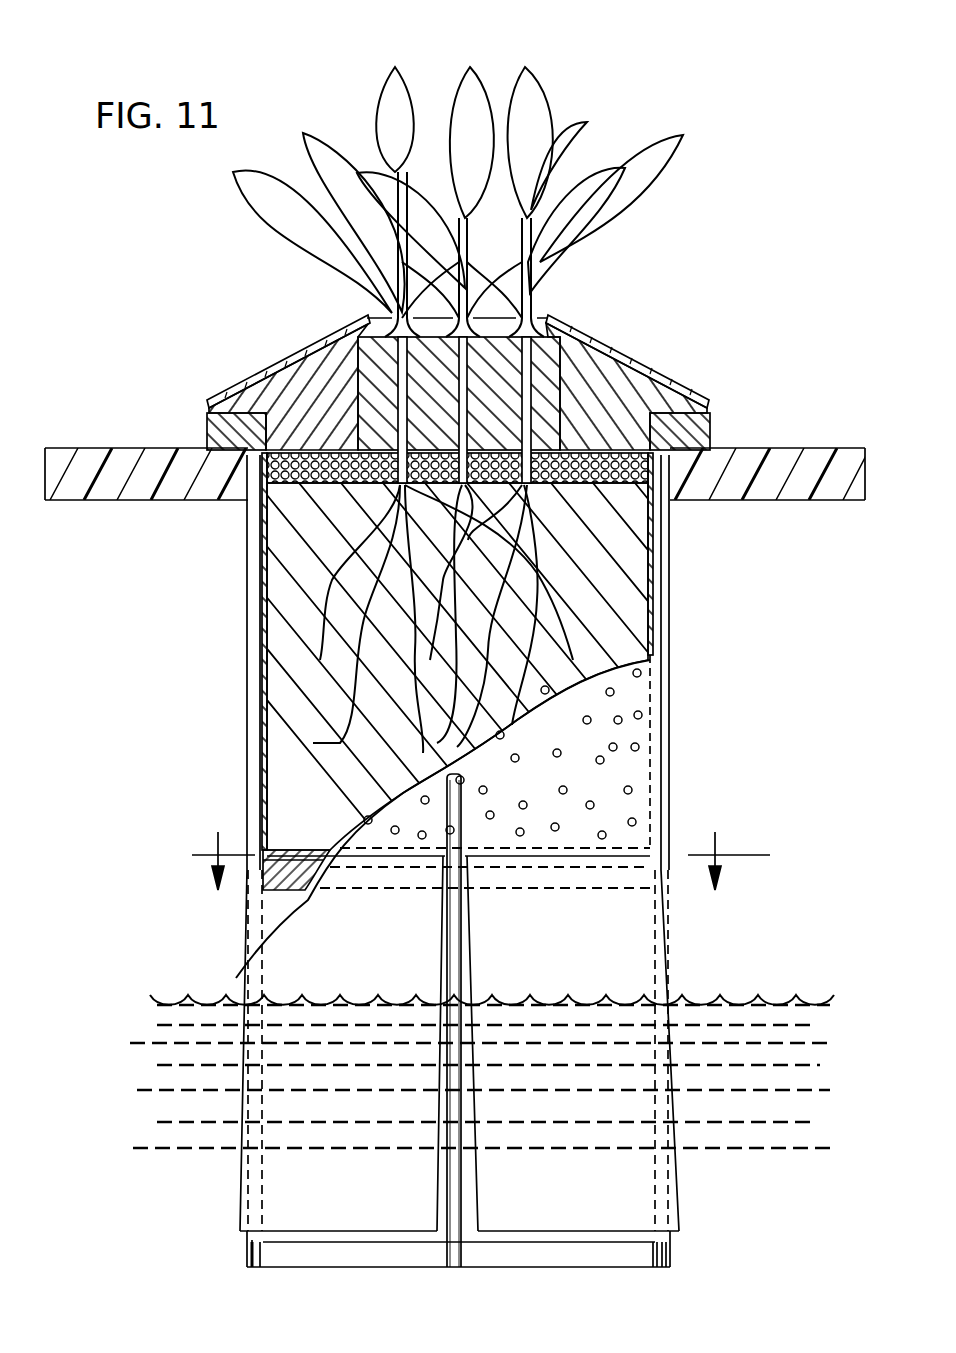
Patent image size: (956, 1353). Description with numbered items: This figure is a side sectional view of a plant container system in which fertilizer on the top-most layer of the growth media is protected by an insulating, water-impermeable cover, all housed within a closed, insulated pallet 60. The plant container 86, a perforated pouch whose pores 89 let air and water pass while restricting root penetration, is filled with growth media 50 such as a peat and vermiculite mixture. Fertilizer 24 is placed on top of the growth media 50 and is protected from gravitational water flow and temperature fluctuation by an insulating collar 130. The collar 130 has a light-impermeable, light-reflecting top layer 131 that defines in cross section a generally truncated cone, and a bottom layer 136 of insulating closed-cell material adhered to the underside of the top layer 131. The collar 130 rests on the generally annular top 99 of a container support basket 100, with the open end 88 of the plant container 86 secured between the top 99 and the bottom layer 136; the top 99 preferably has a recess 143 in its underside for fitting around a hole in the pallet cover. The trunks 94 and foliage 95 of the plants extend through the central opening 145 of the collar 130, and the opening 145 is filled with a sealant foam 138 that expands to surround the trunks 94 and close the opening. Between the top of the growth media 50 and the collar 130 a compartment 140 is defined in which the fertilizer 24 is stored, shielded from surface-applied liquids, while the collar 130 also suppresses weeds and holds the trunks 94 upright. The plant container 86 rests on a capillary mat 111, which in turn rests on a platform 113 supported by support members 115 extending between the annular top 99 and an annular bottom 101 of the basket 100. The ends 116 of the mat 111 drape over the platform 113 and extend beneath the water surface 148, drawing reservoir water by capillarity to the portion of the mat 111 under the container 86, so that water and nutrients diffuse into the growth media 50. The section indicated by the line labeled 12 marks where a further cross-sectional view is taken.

The foliage 95 is at (533, 103).
The trunks 94 is at (408, 417).
The insulating collar 130 is at (446, 355).
The top layer 131 is at (292, 340).
The central opening 145 is at (547, 318).
The sealant foam 138 is at (322, 340).
The bottom layer 136 is at (637, 432).
The compartment 140 is at (327, 455).
The open end 88 is at (208, 400).
The recess 143 is at (692, 413).
The annular top 99 is at (440, 388).
The pallet 60 is at (778, 505).
The fertilizer 24 is at (655, 528).
The growth media 50 is at (285, 628).
The container support basket 100 is at (203, 712).
The plant container 86 is at (572, 754).
The pores 89 is at (600, 760).
The capillary mat 111 is at (628, 940).
The platform 113 is at (505, 888).
The section line 12- 12 is at (474, 856).
The water surface 148 is at (700, 993).
The ends of the mat 116 is at (287, 1185).
The annular bottom 101 is at (381, 1255).
The support members 115 is at (516, 1221).